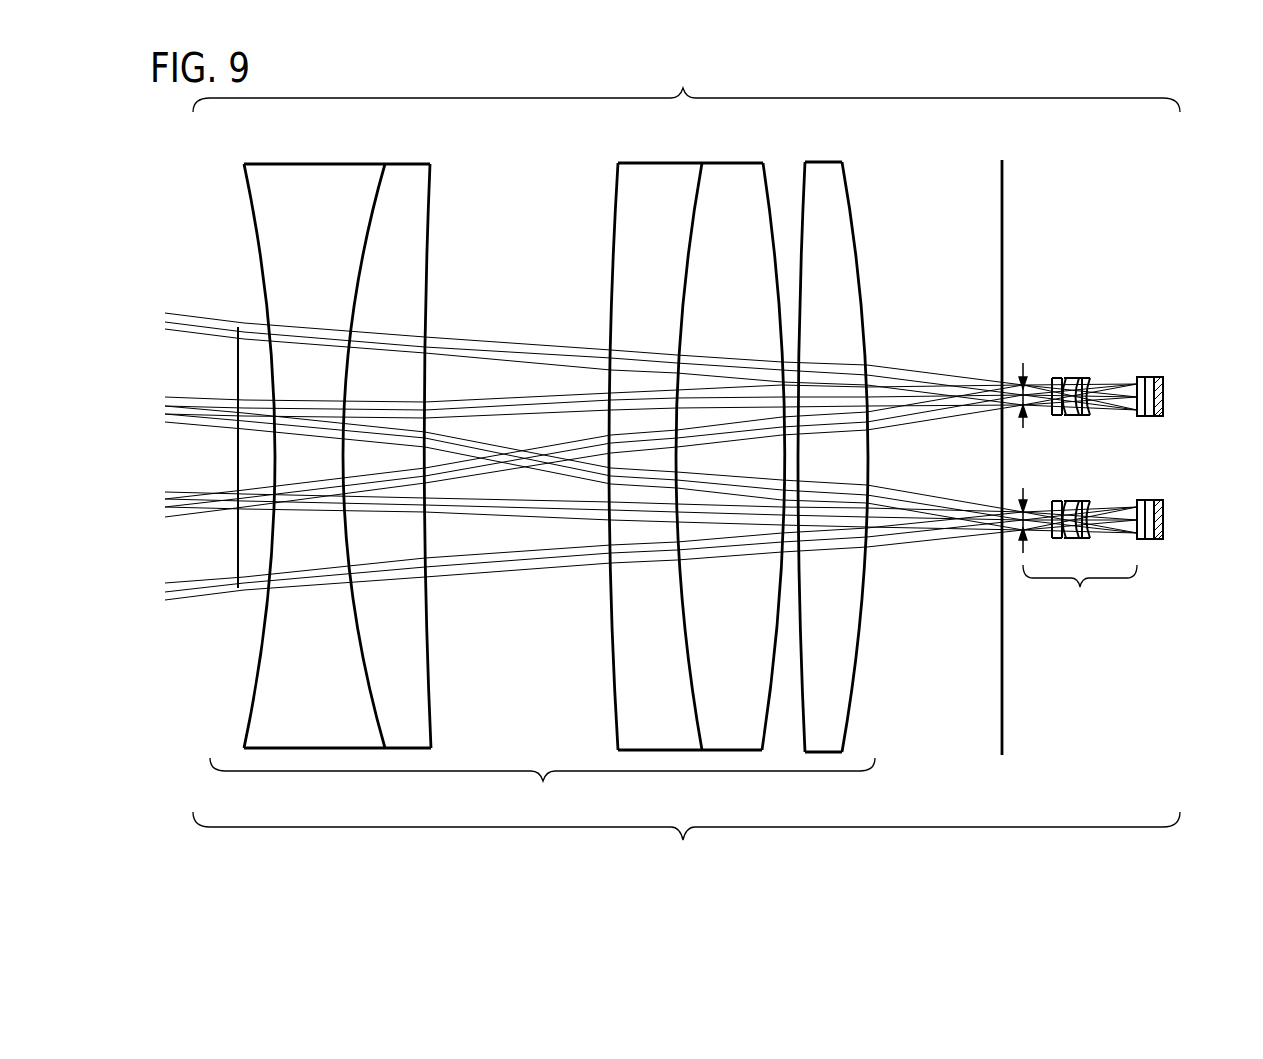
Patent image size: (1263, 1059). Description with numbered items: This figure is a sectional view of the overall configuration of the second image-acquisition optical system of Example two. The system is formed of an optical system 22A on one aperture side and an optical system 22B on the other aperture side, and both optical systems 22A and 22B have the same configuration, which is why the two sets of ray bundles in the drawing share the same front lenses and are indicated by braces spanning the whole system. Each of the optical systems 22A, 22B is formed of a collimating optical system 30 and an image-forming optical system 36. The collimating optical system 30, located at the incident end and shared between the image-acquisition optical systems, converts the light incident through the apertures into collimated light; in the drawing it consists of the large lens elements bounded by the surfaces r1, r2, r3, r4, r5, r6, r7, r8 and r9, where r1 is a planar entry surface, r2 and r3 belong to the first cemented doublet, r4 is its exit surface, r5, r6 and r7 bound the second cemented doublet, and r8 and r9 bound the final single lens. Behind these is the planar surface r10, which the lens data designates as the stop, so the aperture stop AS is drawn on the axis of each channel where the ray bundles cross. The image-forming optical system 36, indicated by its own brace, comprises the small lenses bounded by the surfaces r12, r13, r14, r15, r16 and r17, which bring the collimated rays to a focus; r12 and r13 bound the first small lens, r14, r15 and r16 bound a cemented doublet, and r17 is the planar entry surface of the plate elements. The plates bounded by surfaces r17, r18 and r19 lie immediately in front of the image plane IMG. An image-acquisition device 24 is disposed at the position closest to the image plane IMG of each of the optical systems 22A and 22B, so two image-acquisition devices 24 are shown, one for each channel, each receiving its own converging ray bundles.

The first surface r1 is at (236, 361).
The second surface r2 is at (252, 208).
The third surface r3 is at (377, 174).
The fourth surface r4 is at (428, 230).
The fifth surface r5 is at (615, 199).
The sixth surface r6 is at (696, 182).
The seventh surface r7 is at (768, 172).
The eighth surface r8 is at (803, 175).
The ninth surface r9 is at (851, 191).
The tenth surface r10 is at (1005, 203).
The twelfth surface r12 is at (1052, 380).
The thirteenth surface r13 is at (1063, 413).
The fourteenth surface r14 is at (1067, 377).
The fifteenth surface r15 is at (1081, 416).
The sixteenth surface r16 is at (1086, 378).
The seventeenth surface r17 is at (1093, 413).
The eighteenth surface r18 is at (1140, 376).
The nineteenth surface r19 is at (1158, 412).
The aperture stop AS is at (1022, 362).
The image plane IMG is at (1164, 379).
The image-acquisition device 24 is at (1165, 396).
The image-forming optical system 36 is at (1080, 559).
The collimating optical system 30 is at (542, 786).
The optical system 22A is at (686, 85).
The optical system 22B is at (686, 845).